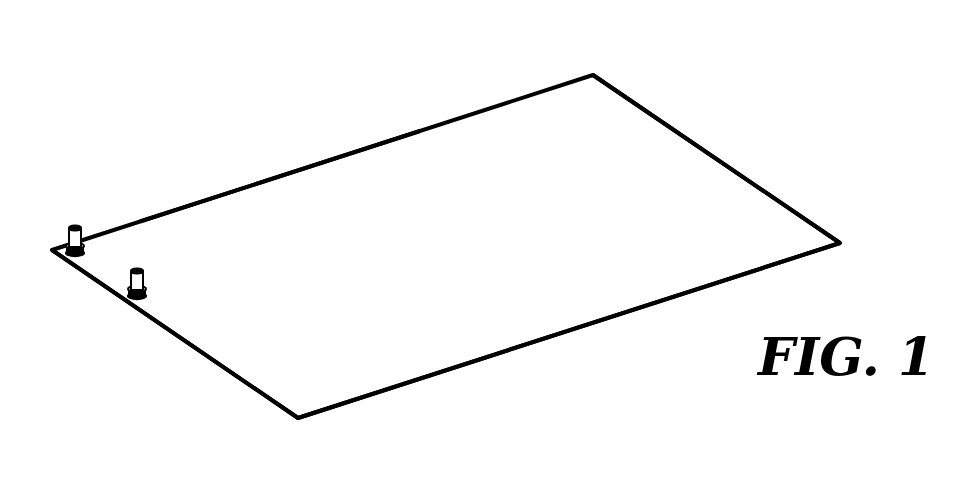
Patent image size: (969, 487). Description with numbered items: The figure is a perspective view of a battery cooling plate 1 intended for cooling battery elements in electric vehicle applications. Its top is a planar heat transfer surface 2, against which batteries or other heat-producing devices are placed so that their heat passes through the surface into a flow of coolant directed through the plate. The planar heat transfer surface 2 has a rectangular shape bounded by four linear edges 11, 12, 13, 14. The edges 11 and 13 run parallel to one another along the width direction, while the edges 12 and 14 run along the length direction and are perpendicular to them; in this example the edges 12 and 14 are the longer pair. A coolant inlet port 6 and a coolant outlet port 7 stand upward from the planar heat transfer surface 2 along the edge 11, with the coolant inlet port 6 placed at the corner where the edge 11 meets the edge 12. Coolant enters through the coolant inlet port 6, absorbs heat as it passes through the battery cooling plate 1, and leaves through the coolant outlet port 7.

The battery cooling plate 1 is at (372, 107).
The planar heat transfer surface 2 is at (445, 260).
The coolant inlet port 6 is at (80, 223).
The coolant outlet port 7 is at (135, 268).
The edge 11 is at (182, 345).
The edge 12 is at (275, 177).
The edge 13 is at (685, 132).
The edge 14 is at (638, 318).